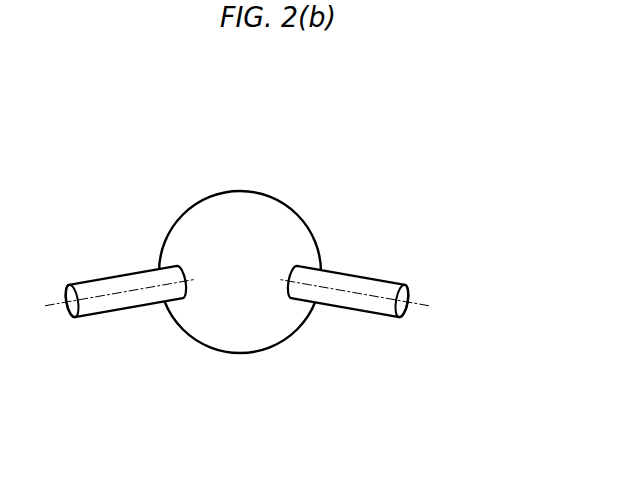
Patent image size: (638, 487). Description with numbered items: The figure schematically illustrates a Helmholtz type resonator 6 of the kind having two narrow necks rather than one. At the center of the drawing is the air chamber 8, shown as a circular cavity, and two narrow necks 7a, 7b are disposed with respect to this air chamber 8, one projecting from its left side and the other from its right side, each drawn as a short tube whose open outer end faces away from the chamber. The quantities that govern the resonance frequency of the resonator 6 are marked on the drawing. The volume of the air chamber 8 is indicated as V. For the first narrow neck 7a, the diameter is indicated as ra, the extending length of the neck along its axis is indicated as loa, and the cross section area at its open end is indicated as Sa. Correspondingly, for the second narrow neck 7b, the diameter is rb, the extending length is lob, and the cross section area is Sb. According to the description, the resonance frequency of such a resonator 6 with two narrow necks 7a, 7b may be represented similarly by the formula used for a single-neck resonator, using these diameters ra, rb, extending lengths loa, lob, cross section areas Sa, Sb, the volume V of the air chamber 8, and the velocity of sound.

The Helmholtz type resonator 6 is at (327, 139).
The narrow neck 7a is at (129, 263).
The narrow neck 7b is at (370, 263).
The air chamber 8 is at (248, 210).
The volume of the air chamber V is at (238, 320).
The cross section area of narrow neck Sa is at (70, 316).
The cross section area of narrow neck Sb is at (404, 316).
The diameter of narrow neck ra is at (69, 285).
The diameter of narrow neck rb is at (405, 285).
The extending length of narrow neck loa is at (194, 363).
The extending length of narrow neck lob is at (291, 298).